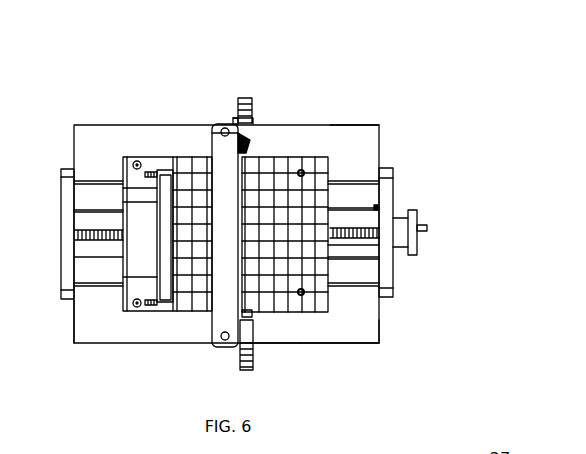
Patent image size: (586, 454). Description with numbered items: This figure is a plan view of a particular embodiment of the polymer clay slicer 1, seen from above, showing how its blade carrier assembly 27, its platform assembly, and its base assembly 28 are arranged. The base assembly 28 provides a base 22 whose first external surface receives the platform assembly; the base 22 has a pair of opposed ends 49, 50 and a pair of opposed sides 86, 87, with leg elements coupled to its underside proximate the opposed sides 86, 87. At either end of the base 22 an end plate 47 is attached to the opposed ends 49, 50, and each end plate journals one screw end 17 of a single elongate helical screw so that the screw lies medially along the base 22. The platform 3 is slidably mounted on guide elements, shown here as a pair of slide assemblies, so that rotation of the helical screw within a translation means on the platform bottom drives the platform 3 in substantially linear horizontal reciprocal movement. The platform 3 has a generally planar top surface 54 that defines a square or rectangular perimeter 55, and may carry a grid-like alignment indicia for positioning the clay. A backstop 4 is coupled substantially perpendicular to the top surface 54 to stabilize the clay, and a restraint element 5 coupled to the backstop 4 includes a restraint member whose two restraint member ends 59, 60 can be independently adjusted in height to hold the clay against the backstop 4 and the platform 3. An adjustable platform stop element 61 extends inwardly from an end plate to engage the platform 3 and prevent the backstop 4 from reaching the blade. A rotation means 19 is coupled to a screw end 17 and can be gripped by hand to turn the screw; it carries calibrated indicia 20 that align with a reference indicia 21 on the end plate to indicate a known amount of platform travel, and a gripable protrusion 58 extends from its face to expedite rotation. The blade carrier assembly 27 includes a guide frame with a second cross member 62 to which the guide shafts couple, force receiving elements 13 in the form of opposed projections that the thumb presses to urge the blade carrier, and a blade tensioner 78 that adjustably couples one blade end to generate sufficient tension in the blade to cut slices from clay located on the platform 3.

The polymer clay slicer 1 is at (33, 87).
The platform 3 is at (318, 163).
The backstop 4 is at (167, 170).
The restraint element 5 is at (180, 170).
The force receiving elements 13 is at (256, 123).
The screw end 17 is at (75, 234).
The rotation means 19 is at (418, 247).
The calibrated indicia 20 is at (413, 215).
The reference indicia 21 is at (387, 222).
The base 22 is at (357, 343).
The blade carrier assembly 27 is at (256, 126).
The base assembly 28 is at (392, 317).
The end plate 47 is at (61, 187).
The opposed end of the base 49 is at (383, 342).
The opposed end of the base 50 is at (74, 327).
The top surface 54 is at (318, 182).
The perimeter 55 is at (285, 155).
The gripable protrusion 58 is at (425, 226).
The restraint member end 59 is at (167, 303).
The restraint member end 60 is at (155, 170).
The adjustable platform stop element 61 is at (370, 272).
The second cross member 62 is at (222, 127).
The blade tensioner 78 is at (215, 125).
The opposed side of the base 86 is at (303, 345).
The opposed side of the base 87 is at (350, 125).